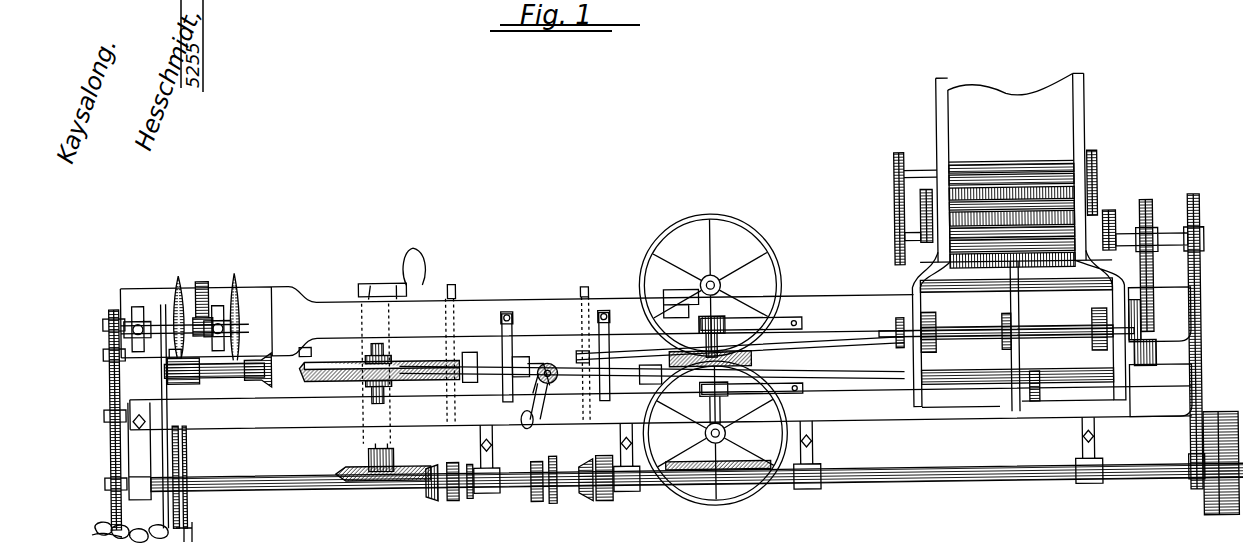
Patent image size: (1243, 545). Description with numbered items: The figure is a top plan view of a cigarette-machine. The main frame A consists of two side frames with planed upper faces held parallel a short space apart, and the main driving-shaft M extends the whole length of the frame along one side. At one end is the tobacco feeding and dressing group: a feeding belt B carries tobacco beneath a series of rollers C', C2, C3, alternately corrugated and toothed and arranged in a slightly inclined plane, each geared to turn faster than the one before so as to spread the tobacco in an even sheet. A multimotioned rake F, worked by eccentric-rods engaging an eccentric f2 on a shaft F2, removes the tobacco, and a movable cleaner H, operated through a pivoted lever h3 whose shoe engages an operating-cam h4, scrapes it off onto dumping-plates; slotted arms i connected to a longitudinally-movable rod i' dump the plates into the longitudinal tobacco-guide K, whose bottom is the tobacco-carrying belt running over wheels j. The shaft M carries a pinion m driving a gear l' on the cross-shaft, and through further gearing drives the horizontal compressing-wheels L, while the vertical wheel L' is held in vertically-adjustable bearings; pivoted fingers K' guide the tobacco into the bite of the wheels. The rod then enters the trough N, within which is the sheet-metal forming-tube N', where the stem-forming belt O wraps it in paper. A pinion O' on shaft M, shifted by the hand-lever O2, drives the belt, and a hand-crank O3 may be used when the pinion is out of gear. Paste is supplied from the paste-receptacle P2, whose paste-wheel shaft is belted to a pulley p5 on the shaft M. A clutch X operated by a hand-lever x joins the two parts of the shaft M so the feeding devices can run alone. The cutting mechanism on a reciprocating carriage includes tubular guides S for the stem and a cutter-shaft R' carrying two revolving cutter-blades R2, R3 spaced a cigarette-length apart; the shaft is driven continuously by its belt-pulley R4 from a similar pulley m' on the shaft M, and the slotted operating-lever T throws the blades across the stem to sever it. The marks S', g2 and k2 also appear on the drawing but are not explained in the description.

The main frame A is at (863, 420).
The main driving-shaft M is at (992, 486).
The pinion O' is at (387, 453).
The pulley p5 is at (557, 500).
The clutch X is at (578, 498).
The pinion m is at (719, 502).
The cutter-shaft R' is at (517, 307).
The belt-pulley R4 is at (175, 272).
The revolving cutter-blade R3 is at (210, 300).
The slotted operating-lever T is at (212, 285).
The revolving cutter-blade R2 is at (240, 300).
The tubular guide S is at (236, 406).
The pulley S' is at (254, 422).
The pulley m' is at (202, 476).
The stem-forming belt O is at (370, 378).
The hand-lever O2 is at (453, 282).
The hand-crank O3 is at (405, 282).
The trough N is at (559, 324).
The hand-lever x is at (585, 286).
The tobacco-guide K is at (652, 372).
The vertically-adjustable finger K' is at (812, 367).
The paste-receptacle P2 is at (548, 362).
The forming-tube N' is at (515, 422).
The horizontal compressing-wheel L is at (710, 272).
The vertical wheel L' is at (741, 305).
The gear l' is at (721, 448).
The feeding belt B is at (1011, 167).
The roller C' is at (1011, 164).
The roller C2 is at (1000, 200).
The roller C3 is at (1022, 230).
The eccentric f2 is at (900, 290).
The multimotioned rake F is at (948, 405).
The shaft F2 is at (935, 368).
The movable cleaner H is at (1006, 331).
The pivoted lever h3 is at (1000, 300).
The operating-cam h4 is at (1022, 302).
The pulley g2 is at (897, 322).
The pulley k2 is at (1032, 400).
The arm i is at (1160, 352).
The longitudinally-movable rod i' is at (1166, 343).
The belt-wheel j is at (1158, 370).